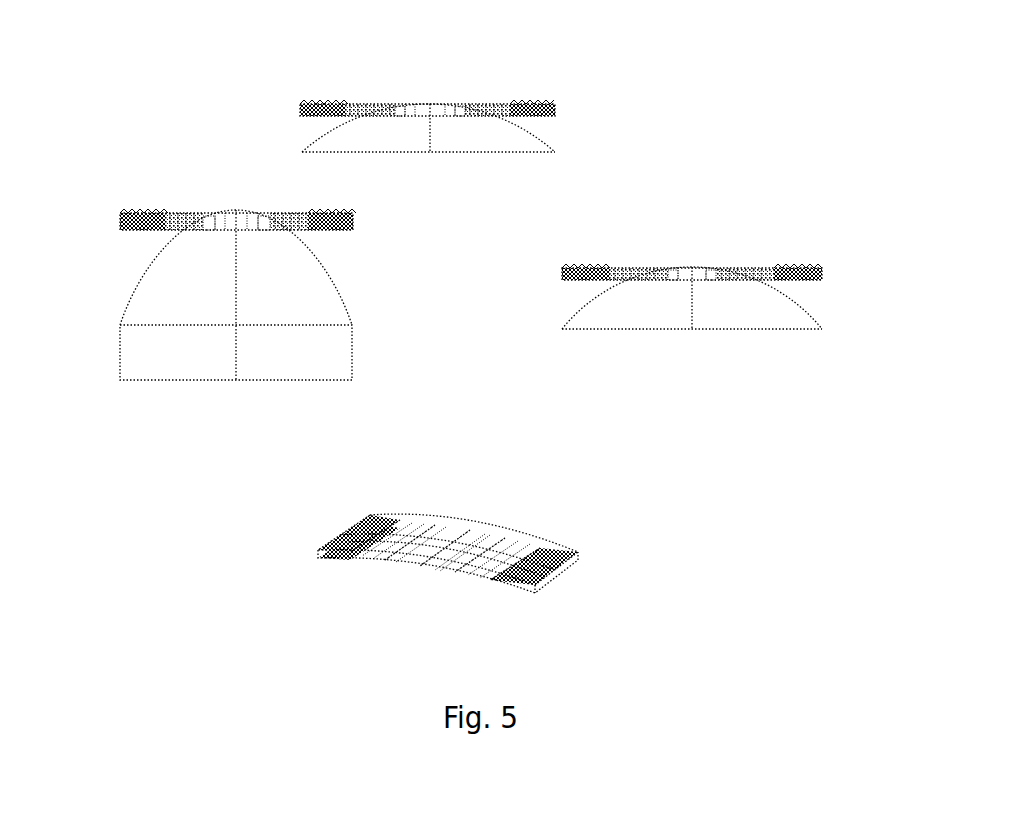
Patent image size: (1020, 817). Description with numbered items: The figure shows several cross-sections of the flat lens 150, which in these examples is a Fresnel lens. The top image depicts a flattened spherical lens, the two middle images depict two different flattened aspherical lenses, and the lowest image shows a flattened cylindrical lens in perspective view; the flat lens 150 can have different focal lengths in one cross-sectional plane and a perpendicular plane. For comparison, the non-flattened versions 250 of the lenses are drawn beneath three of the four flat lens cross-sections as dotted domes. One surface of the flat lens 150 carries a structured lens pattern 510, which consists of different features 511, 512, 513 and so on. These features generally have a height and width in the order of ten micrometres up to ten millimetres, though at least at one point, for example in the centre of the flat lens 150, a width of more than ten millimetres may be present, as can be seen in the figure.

The flat lens 150 is at (555, 105).
The non-flattened version of the lens 250 is at (512, 142).
The structured lens pattern 510 is at (418, 75).
The feature of the lens pattern 511 is at (303, 104).
The feature of the lens pattern 512 is at (338, 103).
The feature of the lens pattern 513 is at (352, 107).